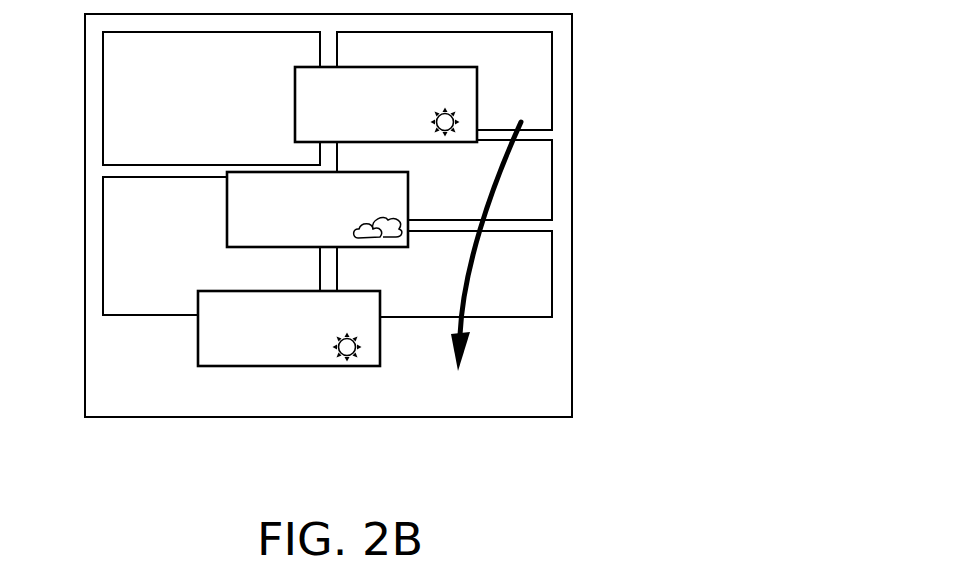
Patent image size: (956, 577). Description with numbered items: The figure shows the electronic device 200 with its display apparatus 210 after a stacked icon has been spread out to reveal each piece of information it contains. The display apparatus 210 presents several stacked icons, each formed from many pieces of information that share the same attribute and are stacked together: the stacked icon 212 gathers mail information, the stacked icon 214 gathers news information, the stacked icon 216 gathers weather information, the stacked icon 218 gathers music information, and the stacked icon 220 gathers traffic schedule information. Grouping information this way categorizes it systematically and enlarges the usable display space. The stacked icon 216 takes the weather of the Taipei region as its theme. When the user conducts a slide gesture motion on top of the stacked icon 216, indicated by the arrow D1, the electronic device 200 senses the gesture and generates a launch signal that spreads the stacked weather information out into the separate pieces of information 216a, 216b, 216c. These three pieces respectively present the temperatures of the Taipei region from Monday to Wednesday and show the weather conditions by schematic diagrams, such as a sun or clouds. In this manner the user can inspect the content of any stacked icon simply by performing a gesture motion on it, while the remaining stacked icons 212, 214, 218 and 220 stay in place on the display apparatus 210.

The electronic device 200 is at (637, 466).
The display apparatus 210 is at (572, 33).
The stacked icon 212 is at (103, 96).
The stacked icon 214 is at (103, 245).
The stacked icon 216 is at (552, 78).
The piece of information 216a is at (380, 348).
The piece of information 216b is at (409, 206).
The piece of information 216c is at (477, 100).
The stacked icon 218 is at (552, 178).
The stacked icon 220 is at (552, 275).
The arrow D1 is at (468, 305).